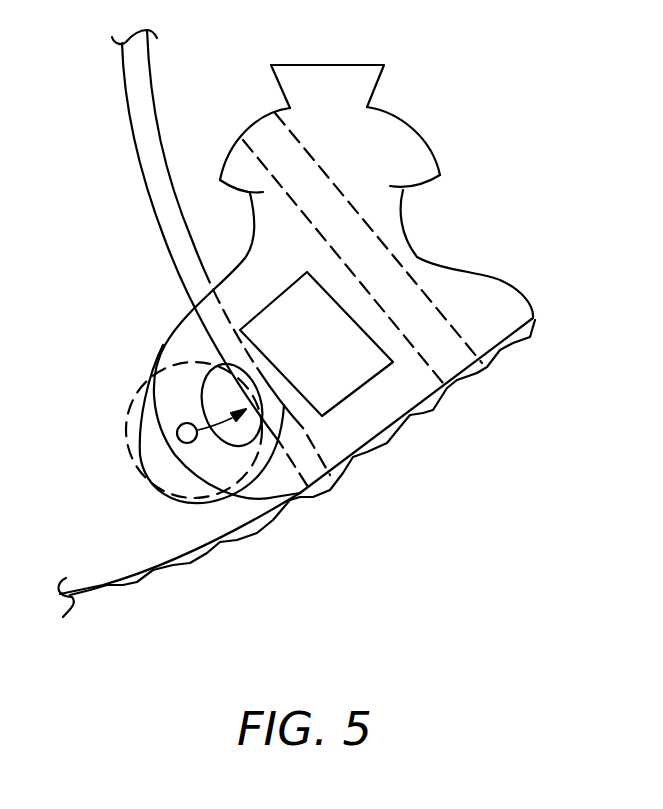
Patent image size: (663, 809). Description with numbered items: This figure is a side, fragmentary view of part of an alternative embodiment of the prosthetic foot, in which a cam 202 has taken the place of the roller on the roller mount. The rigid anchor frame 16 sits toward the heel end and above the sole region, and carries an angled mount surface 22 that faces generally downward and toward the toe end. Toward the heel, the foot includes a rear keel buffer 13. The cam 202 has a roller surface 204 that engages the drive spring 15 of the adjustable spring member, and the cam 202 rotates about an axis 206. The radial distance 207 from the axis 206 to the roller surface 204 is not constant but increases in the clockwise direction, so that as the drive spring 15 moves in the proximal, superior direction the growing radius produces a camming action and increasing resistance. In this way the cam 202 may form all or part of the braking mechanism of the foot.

The rear keel buffer 13 is at (103, 585).
The drive spring 15 is at (148, 180).
The anchor frame 16 is at (398, 223).
The angled mount surface 22 is at (403, 413).
The cam 202 is at (152, 468).
The roller surface 204 is at (250, 395).
The axis 206 is at (178, 431).
The radial distance 207 is at (247, 440).